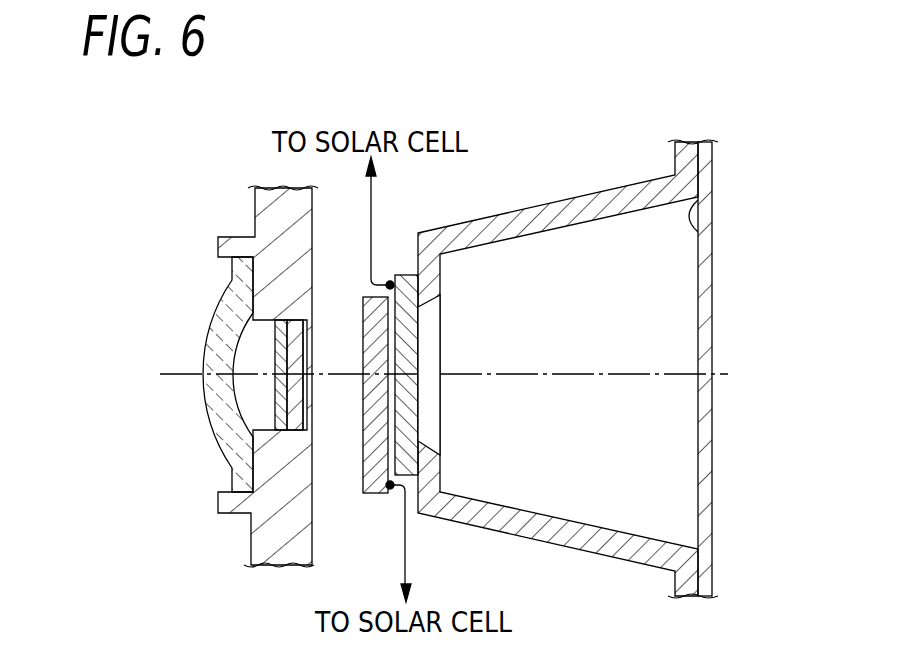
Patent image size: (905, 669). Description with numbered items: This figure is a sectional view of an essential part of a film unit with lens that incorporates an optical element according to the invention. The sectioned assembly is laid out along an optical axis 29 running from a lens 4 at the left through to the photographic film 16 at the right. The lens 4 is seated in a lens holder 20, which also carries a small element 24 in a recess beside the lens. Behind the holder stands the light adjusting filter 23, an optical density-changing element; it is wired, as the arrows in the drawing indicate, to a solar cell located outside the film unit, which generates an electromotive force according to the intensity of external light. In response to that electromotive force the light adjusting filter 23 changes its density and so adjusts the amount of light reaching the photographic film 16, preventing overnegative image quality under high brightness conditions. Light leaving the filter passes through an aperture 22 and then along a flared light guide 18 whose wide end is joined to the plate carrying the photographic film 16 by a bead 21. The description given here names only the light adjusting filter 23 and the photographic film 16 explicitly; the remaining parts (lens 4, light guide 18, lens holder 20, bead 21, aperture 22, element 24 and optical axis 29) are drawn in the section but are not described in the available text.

The lens 4 is at (207, 415).
The photographic film 16 is at (712, 320).
The reflector cone 18 is at (562, 201).
The lens holder 20 is at (258, 204).
The adhesive bead 21 is at (700, 230).
The aperture 22 is at (442, 309).
The light adjusting filter 23 is at (402, 258).
The filter element 24 is at (277, 338).
The optical axis 29 is at (590, 376).